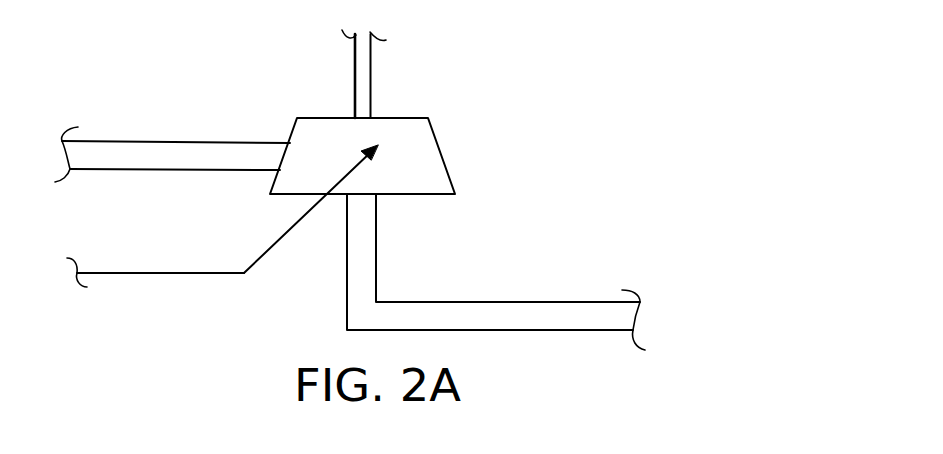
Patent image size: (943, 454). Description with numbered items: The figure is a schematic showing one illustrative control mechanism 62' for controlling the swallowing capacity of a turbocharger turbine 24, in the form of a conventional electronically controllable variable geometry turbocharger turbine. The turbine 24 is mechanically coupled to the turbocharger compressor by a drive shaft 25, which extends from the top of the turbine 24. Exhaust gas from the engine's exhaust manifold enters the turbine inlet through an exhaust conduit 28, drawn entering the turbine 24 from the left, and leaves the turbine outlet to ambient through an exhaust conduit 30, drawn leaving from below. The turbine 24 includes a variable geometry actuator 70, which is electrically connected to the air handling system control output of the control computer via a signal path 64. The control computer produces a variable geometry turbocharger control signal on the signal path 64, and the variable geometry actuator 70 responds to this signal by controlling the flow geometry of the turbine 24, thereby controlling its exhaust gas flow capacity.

The turbine 24 is at (440, 148).
The drive shaft 25 is at (373, 77).
The exhaust conduit 28 is at (165, 141).
The exhaust conduit 30 is at (495, 301).
The signal path 64 is at (173, 273).
The variable geometry actuator 70 is at (338, 177).
The control mechanism 62' is at (672, 86).